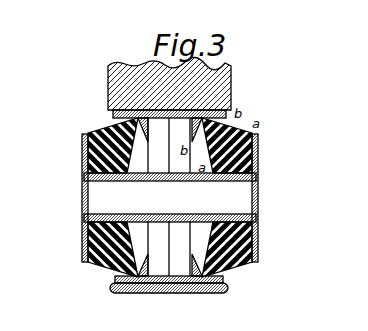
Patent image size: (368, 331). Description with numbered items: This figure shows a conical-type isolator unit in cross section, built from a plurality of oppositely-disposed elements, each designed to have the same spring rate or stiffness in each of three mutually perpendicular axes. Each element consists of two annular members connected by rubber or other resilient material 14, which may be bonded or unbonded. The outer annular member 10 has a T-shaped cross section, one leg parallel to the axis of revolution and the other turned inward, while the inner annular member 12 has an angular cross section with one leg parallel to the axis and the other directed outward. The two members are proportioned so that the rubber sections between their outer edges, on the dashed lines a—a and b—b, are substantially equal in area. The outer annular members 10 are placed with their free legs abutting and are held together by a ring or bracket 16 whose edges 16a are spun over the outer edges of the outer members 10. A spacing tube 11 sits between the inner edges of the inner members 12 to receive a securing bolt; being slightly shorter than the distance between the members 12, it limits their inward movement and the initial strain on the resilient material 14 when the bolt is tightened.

The outer annular member 10 is at (110, 285).
The spacing tube 11 is at (150, 181).
The inner annular member 12 is at (82, 163).
The rubber or other resilient material 14 is at (110, 128).
The ring or bracket 16 is at (108, 70).
The edges 16a is at (234, 115).